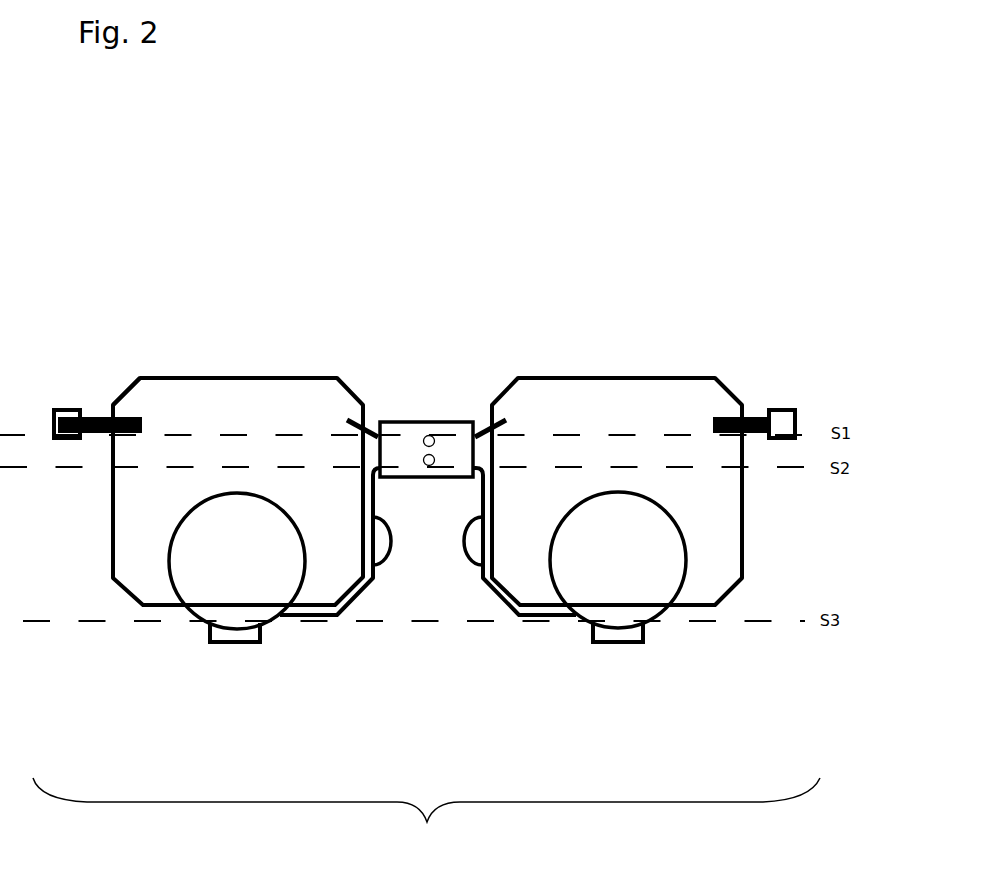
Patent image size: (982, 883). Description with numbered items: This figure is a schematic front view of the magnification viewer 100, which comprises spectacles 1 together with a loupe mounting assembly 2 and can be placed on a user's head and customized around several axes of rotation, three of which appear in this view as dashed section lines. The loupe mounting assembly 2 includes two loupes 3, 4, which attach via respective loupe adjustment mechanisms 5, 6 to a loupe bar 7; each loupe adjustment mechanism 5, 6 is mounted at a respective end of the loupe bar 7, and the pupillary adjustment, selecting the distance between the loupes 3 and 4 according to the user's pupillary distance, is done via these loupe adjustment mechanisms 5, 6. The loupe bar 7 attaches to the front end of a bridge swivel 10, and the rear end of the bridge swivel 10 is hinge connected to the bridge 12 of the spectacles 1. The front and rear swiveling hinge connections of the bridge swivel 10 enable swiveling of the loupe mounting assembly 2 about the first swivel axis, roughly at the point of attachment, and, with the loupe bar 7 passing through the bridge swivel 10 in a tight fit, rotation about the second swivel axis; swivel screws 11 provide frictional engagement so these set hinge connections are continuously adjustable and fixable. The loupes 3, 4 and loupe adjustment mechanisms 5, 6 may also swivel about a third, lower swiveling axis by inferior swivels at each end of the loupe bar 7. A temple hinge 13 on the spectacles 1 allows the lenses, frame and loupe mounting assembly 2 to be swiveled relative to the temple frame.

The spectacles 1 is at (320, 356).
The loupe mounting assembly 2 is at (442, 512).
The loupe 3 is at (188, 612).
The loupe 4 is at (668, 610).
The loupe adjustment mechanism 5 is at (242, 642).
The loupe adjustment mechanism 6 is at (618, 642).
The loupe bar 7 is at (355, 602).
The bridge swivel 10 is at (455, 443).
The swivel screws 11 is at (428, 455).
The bridge 12 is at (496, 418).
The temple hinge 13 is at (58, 408).
The magnification viewer 100 is at (426, 813).